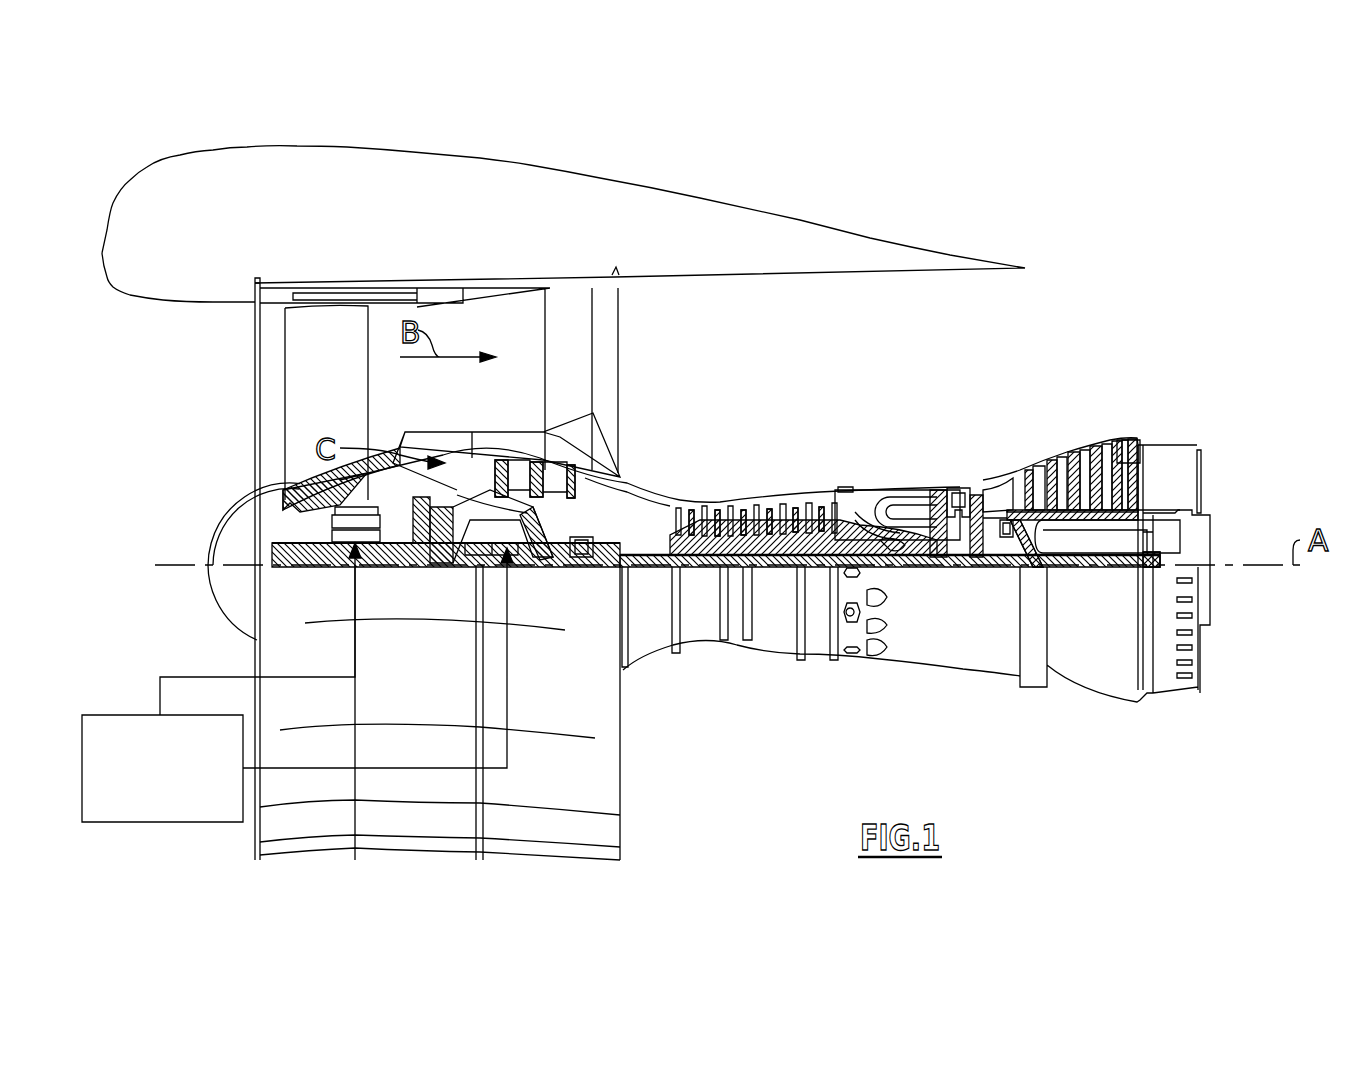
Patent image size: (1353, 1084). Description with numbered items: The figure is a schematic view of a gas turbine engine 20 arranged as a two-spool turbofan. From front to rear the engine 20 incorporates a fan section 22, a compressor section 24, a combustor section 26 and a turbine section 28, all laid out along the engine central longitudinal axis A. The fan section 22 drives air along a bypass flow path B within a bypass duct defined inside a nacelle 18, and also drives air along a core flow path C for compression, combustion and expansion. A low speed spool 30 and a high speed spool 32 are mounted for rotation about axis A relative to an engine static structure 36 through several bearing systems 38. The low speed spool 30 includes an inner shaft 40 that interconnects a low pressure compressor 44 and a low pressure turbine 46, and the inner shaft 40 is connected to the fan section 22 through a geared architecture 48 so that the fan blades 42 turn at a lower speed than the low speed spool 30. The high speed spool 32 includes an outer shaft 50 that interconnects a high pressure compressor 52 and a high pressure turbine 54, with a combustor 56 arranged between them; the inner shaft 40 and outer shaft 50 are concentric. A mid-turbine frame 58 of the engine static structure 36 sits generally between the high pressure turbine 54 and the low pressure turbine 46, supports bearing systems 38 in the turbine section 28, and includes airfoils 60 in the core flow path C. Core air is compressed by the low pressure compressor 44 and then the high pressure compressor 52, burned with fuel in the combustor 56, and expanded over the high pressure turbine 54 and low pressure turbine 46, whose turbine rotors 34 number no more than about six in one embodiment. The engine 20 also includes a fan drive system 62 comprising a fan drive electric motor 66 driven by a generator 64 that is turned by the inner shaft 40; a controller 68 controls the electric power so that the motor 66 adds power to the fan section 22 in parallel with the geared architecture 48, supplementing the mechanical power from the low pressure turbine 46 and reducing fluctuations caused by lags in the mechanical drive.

The nacelle 18 is at (572, 197).
The gas turbine engine 20 is at (1048, 201).
The fan section 22 is at (465, 258).
The compressor section 24 is at (852, 395).
The combustor section 26 is at (863, 395).
The turbine section 28 is at (933, 395).
The low speed spool 30 is at (777, 570).
The high speed spool 32 is at (817, 537).
The turbine rotors 34 is at (1105, 537).
The engine static structure 36 is at (817, 658).
The bearing systems 38 is at (580, 560).
The inner shaft 40 is at (633, 590).
The fan blades 42 is at (340, 411).
The low pressure compressor 44 is at (560, 440).
The low pressure turbine 46 is at (1087, 460).
The geared architecture 48 is at (442, 545).
The outer shaft 50 is at (902, 550).
The high pressure compressor 52 is at (753, 540).
The high pressure turbine 54 is at (957, 487).
The combustor 56 is at (892, 510).
The mid-turbine frame 58 is at (1002, 480).
The airfoils 60 is at (1020, 547).
The fan drive system 62 is at (256, 528).
The generator 64 is at (517, 550).
The fan drive electric motor 66 is at (330, 533).
The controller 68 is at (149, 799).